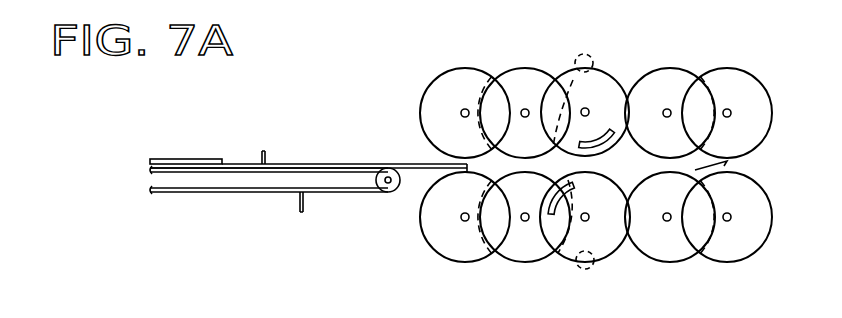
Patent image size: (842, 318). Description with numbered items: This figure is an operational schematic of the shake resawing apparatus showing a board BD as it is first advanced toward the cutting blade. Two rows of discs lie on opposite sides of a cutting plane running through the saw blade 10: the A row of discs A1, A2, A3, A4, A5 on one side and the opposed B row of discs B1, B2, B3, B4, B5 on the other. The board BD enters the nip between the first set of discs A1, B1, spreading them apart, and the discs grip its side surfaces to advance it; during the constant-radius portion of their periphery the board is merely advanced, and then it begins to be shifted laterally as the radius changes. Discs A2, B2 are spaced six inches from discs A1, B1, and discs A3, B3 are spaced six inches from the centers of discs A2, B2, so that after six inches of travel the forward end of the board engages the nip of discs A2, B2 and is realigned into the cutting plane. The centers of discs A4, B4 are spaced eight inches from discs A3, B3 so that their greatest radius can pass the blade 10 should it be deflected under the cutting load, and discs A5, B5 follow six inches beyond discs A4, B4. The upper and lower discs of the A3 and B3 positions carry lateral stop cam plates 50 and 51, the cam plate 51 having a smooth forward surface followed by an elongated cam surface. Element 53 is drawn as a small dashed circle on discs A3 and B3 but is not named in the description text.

The first A-row disc A1 is at (462, 68).
The second A-row disc A2 is at (523, 68).
The third A-row disc A3 is at (573, 67).
The fourth A-row disc A4 is at (665, 68).
The fifth A-row disc A5 is at (727, 70).
The first B-row disc B1 is at (463, 262).
The second B-row disc B2 is at (523, 262).
The third B-row disc B3 is at (564, 260).
The fourth B-row disc B4 is at (666, 260).
The fifth B-row disc B5 is at (728, 260).
The board BD is at (277, 160).
The saw blade 10 is at (616, 162).
The cam plate 50 is at (606, 127).
The cam plate 51 is at (573, 186).
The pin / hole (dashed) 53 is at (593, 60).